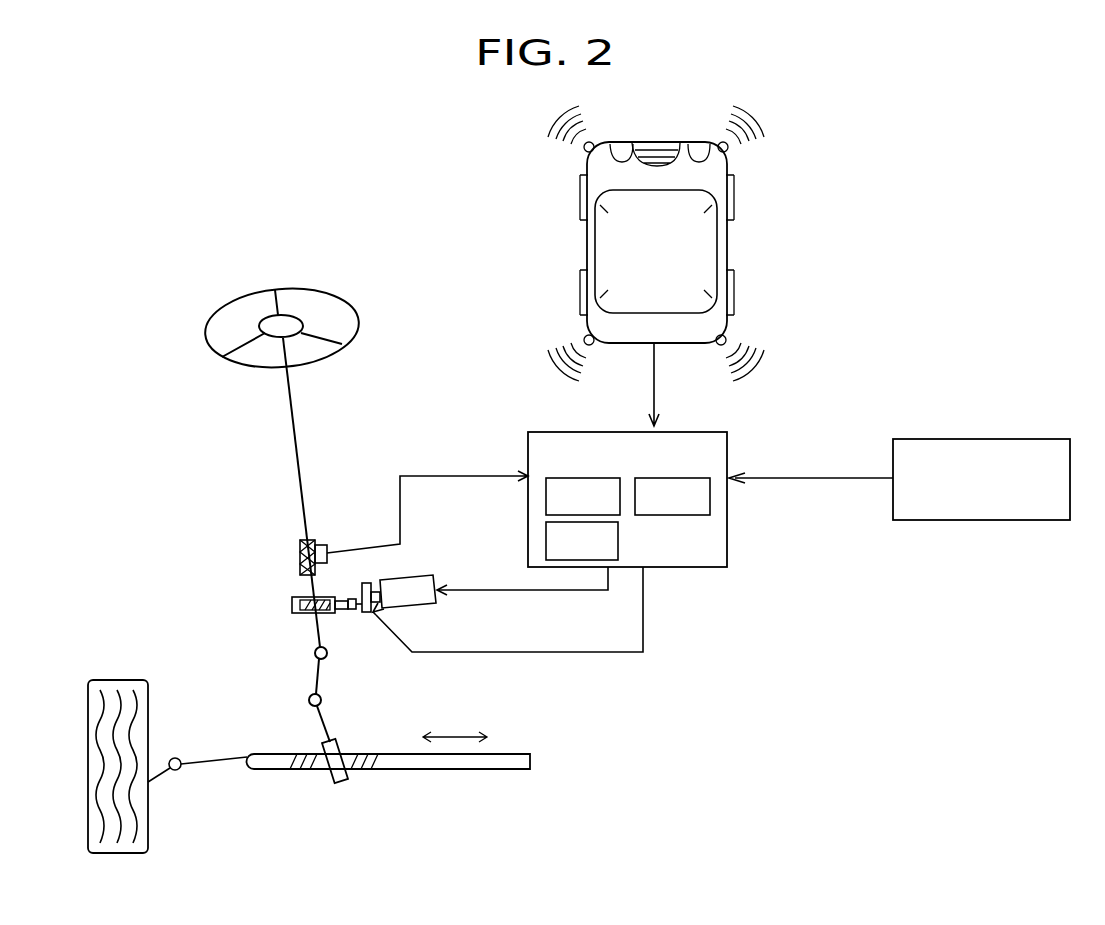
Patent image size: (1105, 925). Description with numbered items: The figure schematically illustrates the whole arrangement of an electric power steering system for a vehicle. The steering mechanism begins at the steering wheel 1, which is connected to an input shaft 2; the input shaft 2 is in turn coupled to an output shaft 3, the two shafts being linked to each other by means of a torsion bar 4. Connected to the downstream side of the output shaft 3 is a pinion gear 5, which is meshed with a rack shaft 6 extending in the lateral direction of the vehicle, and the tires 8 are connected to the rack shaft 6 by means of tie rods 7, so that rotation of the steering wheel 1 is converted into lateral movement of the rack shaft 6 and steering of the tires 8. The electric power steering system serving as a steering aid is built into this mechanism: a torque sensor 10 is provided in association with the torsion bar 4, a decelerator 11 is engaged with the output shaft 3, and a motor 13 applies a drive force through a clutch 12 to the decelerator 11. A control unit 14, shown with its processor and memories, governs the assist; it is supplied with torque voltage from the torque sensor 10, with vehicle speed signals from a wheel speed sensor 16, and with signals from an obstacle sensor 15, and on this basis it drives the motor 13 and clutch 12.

The steering wheel 1 is at (323, 290).
The input shaft 2 is at (293, 424).
The output shaft 3 is at (316, 630).
The torsion bar 4 is at (300, 555).
The pinion gear 5 is at (336, 744).
The rack shaft 6 is at (378, 768).
The tie rods 7 is at (215, 763).
The tires 8 is at (122, 680).
The torque sensor 10 is at (318, 540).
The decelerator 11 is at (300, 598).
The clutch 12 is at (366, 612).
The motor 13 is at (415, 575).
The control unit 14 is at (572, 432).
The obstacle sensor 15 is at (727, 250).
The wheel speed sensor 16 is at (975, 520).